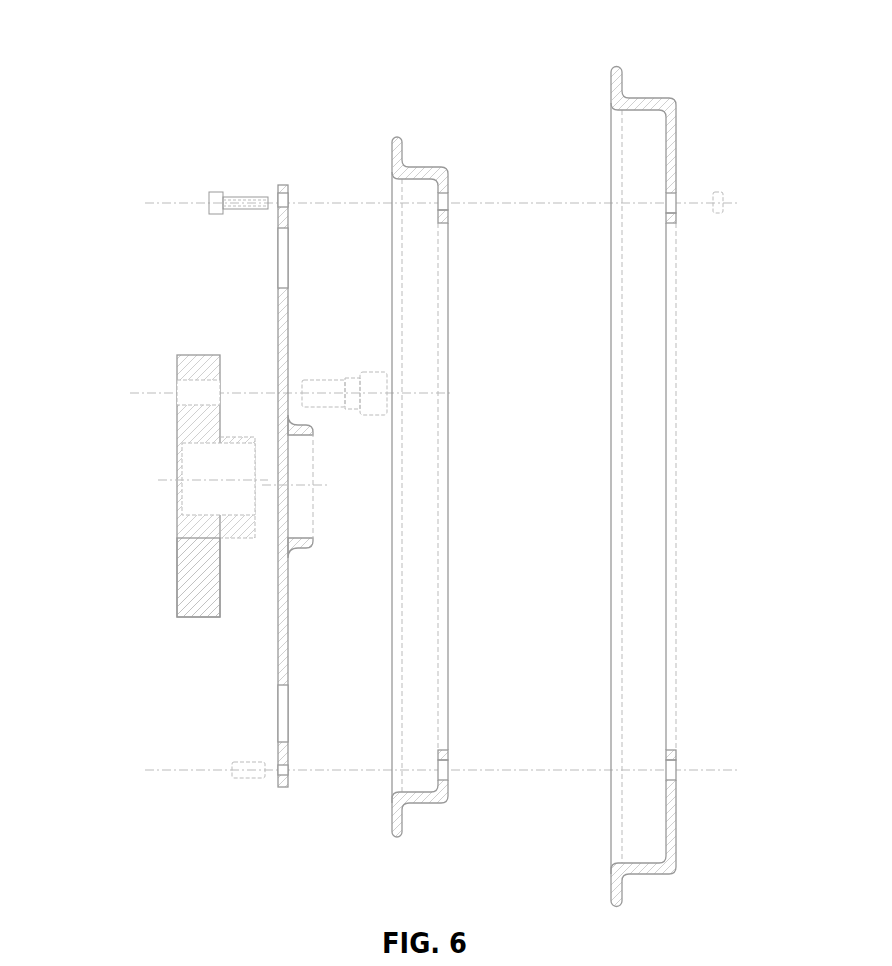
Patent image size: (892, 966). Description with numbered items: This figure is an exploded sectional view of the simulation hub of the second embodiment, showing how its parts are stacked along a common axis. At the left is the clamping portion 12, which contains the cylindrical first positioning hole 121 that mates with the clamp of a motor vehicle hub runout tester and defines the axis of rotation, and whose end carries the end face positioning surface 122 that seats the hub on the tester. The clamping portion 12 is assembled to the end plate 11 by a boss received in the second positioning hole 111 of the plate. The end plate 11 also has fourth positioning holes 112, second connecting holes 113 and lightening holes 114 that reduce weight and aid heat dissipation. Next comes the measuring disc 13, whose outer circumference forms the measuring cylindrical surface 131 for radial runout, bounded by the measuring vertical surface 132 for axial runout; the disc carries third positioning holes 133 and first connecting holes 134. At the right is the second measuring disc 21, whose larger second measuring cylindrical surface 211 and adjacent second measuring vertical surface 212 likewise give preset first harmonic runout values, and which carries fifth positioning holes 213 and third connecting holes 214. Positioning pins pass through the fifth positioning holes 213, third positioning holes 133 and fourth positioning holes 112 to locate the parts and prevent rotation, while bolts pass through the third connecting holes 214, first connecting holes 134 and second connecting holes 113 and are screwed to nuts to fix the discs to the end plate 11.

The end plate 11 is at (278, 627).
The second positioning hole 111 is at (292, 462).
The fourth positioning holes 112 is at (280, 772).
The second connecting holes 113 is at (279, 198).
The lightening holes 114 is at (285, 252).
The clamping portion 12 is at (156, 498).
The first positioning hole 121 is at (198, 470).
The end face positioning surface 122 is at (180, 545).
The measuring disc 13 is at (481, 455).
The measuring cylindrical surface 131 is at (430, 168).
The measuring vertical surface 132 is at (404, 155).
The third positioning holes 133 is at (447, 775).
The first connecting holes 134 is at (449, 197).
The second measuring disc 21 is at (704, 453).
The second measuring cylindrical surface 211 is at (645, 97).
The second measuring vertical surface 212 is at (622, 80).
The fifth positioning holes 213 is at (676, 775).
The third connecting holes 214 is at (676, 200).